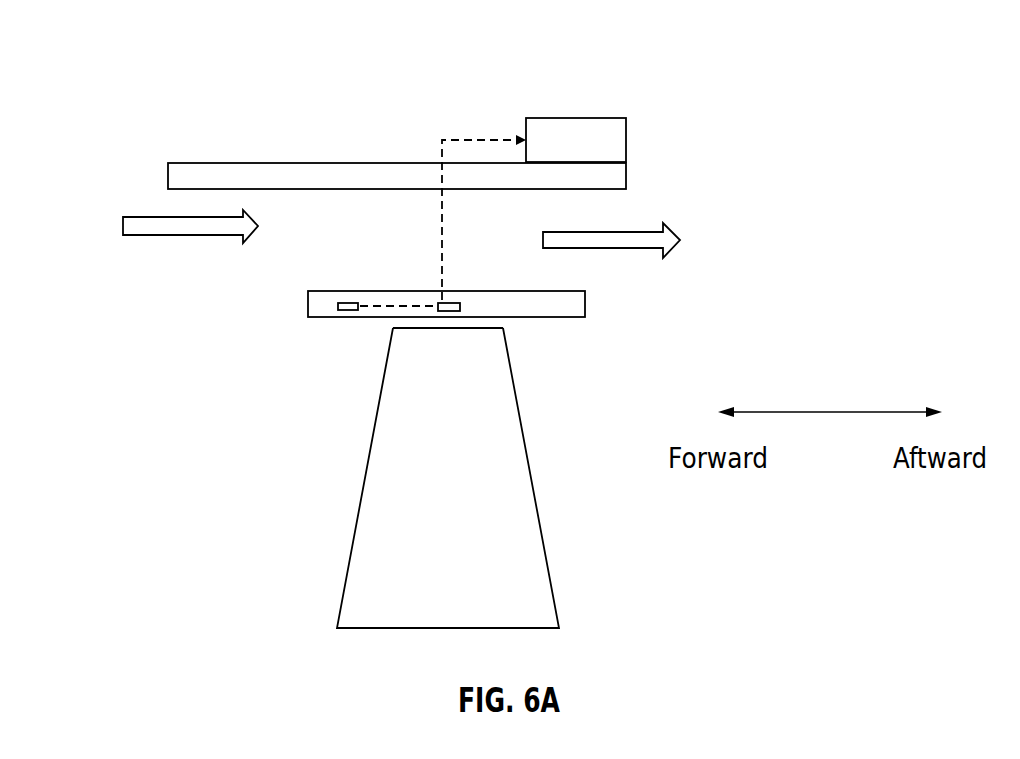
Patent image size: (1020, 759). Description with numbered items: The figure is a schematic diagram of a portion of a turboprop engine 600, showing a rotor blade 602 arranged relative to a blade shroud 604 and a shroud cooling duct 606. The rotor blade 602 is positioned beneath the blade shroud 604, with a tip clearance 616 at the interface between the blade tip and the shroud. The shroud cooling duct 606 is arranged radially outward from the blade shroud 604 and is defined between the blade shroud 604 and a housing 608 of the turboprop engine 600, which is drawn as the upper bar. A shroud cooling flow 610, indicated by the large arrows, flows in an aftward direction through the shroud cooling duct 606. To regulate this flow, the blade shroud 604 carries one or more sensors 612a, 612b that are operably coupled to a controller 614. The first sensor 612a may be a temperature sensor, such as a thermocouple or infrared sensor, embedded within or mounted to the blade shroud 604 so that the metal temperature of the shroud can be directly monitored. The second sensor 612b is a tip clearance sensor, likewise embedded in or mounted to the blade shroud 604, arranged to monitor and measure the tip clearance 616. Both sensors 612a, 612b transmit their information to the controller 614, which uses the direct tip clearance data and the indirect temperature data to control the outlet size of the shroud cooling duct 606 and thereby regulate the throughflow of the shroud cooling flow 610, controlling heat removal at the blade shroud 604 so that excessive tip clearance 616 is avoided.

The turboprop engine 600 is at (147, 72).
The rotor blade 602 is at (382, 537).
The blade shroud 604 is at (573, 317).
The shroud cooling duct 606 is at (332, 210).
The housing 608 is at (250, 173).
The shroud cooling flow 610 is at (175, 228).
The temperature sensor 612a is at (348, 302).
The tip clearance sensor 612b is at (452, 302).
The controller 614 is at (613, 142).
The tip clearance 616 is at (373, 334).